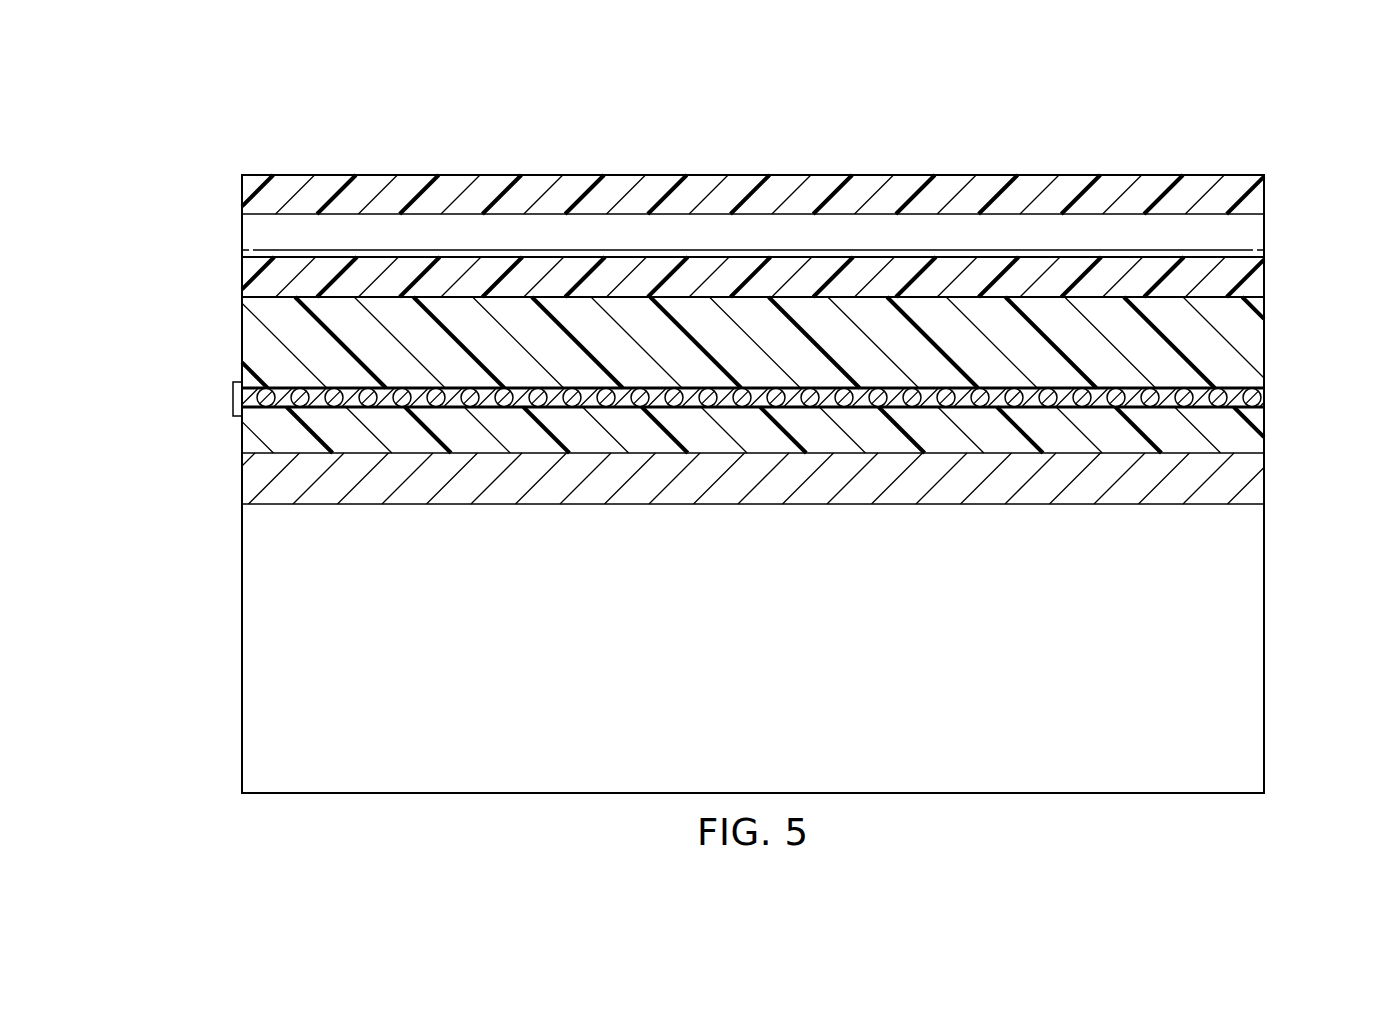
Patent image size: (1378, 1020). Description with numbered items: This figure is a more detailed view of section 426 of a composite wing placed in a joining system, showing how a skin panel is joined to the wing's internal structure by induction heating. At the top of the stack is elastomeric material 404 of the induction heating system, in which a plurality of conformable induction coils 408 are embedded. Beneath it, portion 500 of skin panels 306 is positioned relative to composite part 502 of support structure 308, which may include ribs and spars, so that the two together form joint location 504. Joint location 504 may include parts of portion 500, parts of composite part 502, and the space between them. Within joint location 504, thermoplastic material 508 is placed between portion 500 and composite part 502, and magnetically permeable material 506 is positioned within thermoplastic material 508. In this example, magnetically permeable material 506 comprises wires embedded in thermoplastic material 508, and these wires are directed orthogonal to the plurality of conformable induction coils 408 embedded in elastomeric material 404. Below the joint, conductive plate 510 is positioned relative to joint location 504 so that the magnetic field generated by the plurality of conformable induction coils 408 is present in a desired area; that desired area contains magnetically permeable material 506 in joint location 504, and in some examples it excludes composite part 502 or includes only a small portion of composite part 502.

The section 426 is at (400, 94).
The elastomeric material 404 is at (325, 188).
The plurality of conformable induction coils 408 is at (506, 228).
The joint location 504 is at (152, 358).
The portion 500 is at (253, 342).
The thermoplastic material 508 is at (761, 389).
The magnetically permeable material 506 is at (1262, 387).
The composite part 502 is at (250, 444).
The conductive plate 510 is at (255, 485).
The skin panels 306 is at (1285, 337).
The support structure 308 is at (1285, 689).